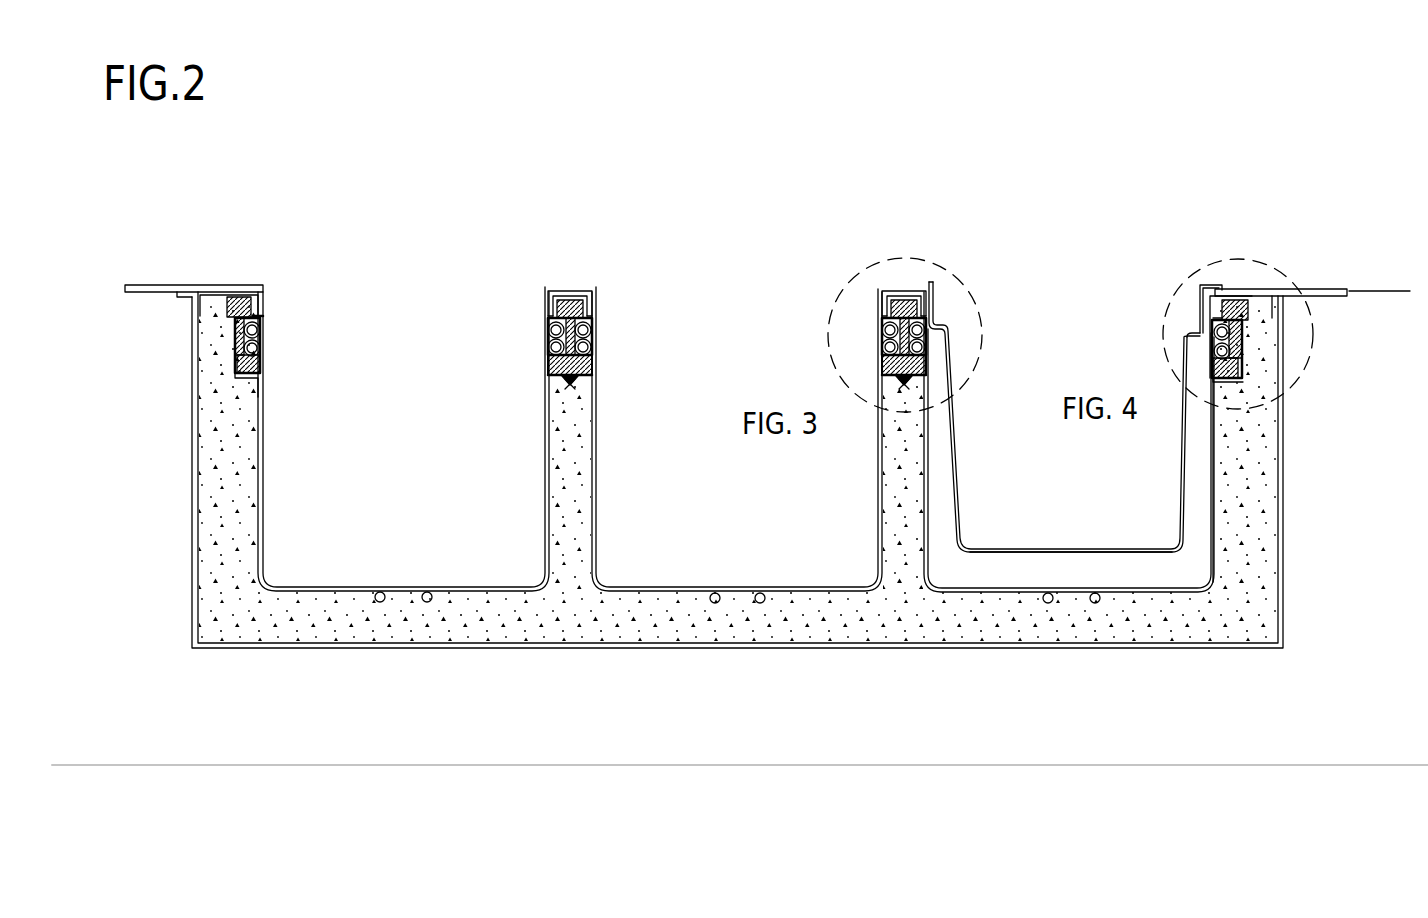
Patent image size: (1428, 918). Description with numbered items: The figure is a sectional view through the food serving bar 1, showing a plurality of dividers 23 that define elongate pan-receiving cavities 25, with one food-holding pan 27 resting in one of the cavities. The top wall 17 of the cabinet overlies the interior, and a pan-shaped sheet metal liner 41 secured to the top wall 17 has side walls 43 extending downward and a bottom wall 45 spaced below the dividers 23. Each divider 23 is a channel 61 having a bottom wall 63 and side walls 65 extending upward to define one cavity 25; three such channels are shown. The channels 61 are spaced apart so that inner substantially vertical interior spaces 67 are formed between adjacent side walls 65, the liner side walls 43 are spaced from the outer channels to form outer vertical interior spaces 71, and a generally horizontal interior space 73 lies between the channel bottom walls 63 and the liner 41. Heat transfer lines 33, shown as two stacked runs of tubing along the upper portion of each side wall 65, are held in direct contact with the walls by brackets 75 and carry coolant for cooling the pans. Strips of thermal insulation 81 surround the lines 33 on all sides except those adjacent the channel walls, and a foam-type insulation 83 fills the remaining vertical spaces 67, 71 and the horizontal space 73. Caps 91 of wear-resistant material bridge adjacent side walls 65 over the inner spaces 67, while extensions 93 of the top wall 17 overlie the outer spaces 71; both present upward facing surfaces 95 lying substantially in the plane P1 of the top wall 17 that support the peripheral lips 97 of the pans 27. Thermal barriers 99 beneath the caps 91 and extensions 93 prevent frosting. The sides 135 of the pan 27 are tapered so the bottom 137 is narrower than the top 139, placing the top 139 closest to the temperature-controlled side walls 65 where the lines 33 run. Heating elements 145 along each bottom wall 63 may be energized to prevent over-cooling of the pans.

The food serving bar 1 is at (1123, 122).
The top wall 17 is at (152, 285).
The divider 23 is at (190, 466).
The pan-receiving cavity 25 is at (425, 432).
The food-holding pan 27 is at (1075, 550).
The heat transfer line 33 is at (260, 347).
The liner 41 is at (1282, 378).
The side wall of liner 43 is at (193, 514).
The bottom wall of liner 45 is at (508, 650).
The channel 61 is at (262, 437).
The bottom wall of channel 63 is at (325, 593).
The side wall of channel 65 is at (262, 532).
The inner vertical interior space 67 is at (572, 457).
The outer vertical interior space 71 is at (215, 426).
The horizontal interior space 73 is at (261, 617).
The bracket 75 is at (237, 360).
The strip of thermal insulation 81 is at (237, 340).
The foam-type insulation 83 is at (207, 622).
The cap 91 is at (548, 300).
The top wall extension 93 is at (222, 300).
The upward facing surface 95 is at (234, 300).
The peripheral lip 97 is at (1215, 298).
The thermal barrier 99 is at (212, 297).
The side of pan 135 is at (955, 502).
The bottom of pan 137 is at (988, 555).
The top of pan 139 is at (930, 288).
The heating element 145 is at (427, 603).
The plane of top wall P1 is at (1378, 290).